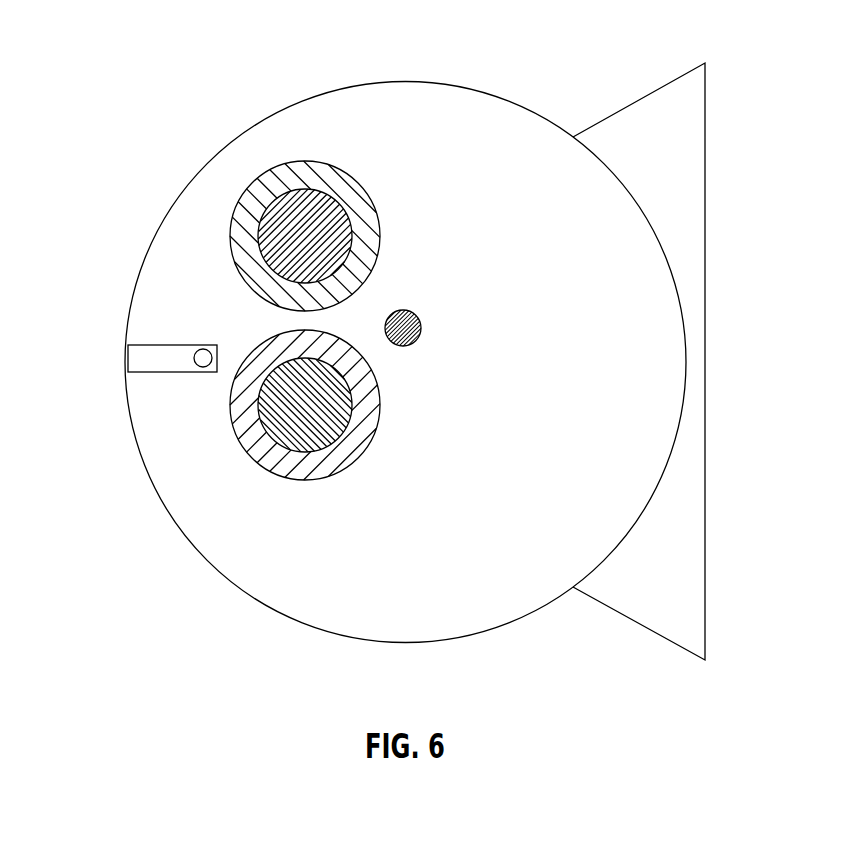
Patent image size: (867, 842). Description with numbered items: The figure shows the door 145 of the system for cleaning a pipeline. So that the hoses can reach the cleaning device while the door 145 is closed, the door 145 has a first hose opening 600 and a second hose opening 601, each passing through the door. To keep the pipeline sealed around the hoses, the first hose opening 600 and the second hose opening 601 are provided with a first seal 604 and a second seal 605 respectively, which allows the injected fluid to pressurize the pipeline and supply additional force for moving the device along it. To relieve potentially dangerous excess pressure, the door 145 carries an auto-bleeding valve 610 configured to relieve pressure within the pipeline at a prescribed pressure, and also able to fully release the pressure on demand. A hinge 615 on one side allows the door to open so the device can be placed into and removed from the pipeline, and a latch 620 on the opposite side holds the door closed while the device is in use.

The door 145 is at (403, 82).
The hinge 615 is at (705, 348).
The second seal 605 is at (377, 238).
The second hose opening 601 is at (260, 233).
The first seal 604 is at (380, 403).
The first hose opening 600 is at (260, 405).
The auto-bleeding valve 610 is at (423, 332).
The latch 620 is at (135, 360).